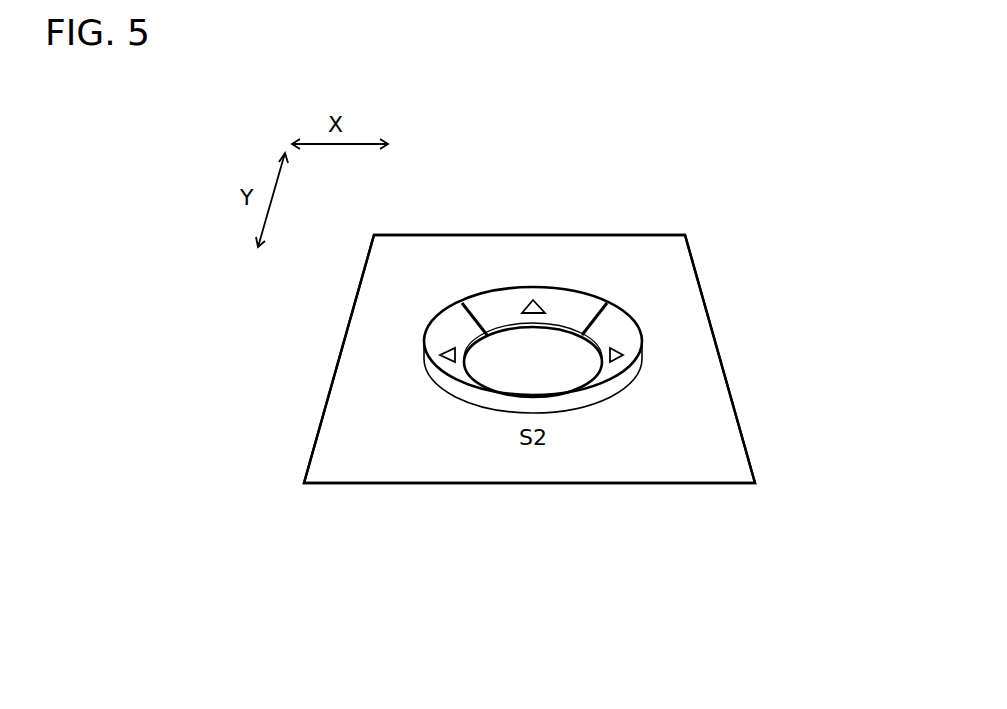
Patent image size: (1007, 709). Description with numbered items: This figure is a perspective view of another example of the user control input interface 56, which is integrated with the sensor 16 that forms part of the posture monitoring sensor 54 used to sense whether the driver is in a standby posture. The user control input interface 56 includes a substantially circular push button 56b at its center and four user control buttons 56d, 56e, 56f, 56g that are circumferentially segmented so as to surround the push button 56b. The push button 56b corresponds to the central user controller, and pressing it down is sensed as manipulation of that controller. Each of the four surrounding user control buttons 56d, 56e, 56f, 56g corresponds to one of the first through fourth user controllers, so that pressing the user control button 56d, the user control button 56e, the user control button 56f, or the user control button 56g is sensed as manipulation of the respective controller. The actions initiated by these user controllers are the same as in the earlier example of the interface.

The sensor 16 is at (670, 277).
The posture monitoring sensor 54 is at (692, 417).
The user control input interface 56 is at (565, 140).
The push button 56b is at (552, 378).
The user control button 56d is at (568, 308).
The user control button 56e is at (497, 403).
The user control button 56f is at (447, 332).
The user control button 56g is at (623, 335).